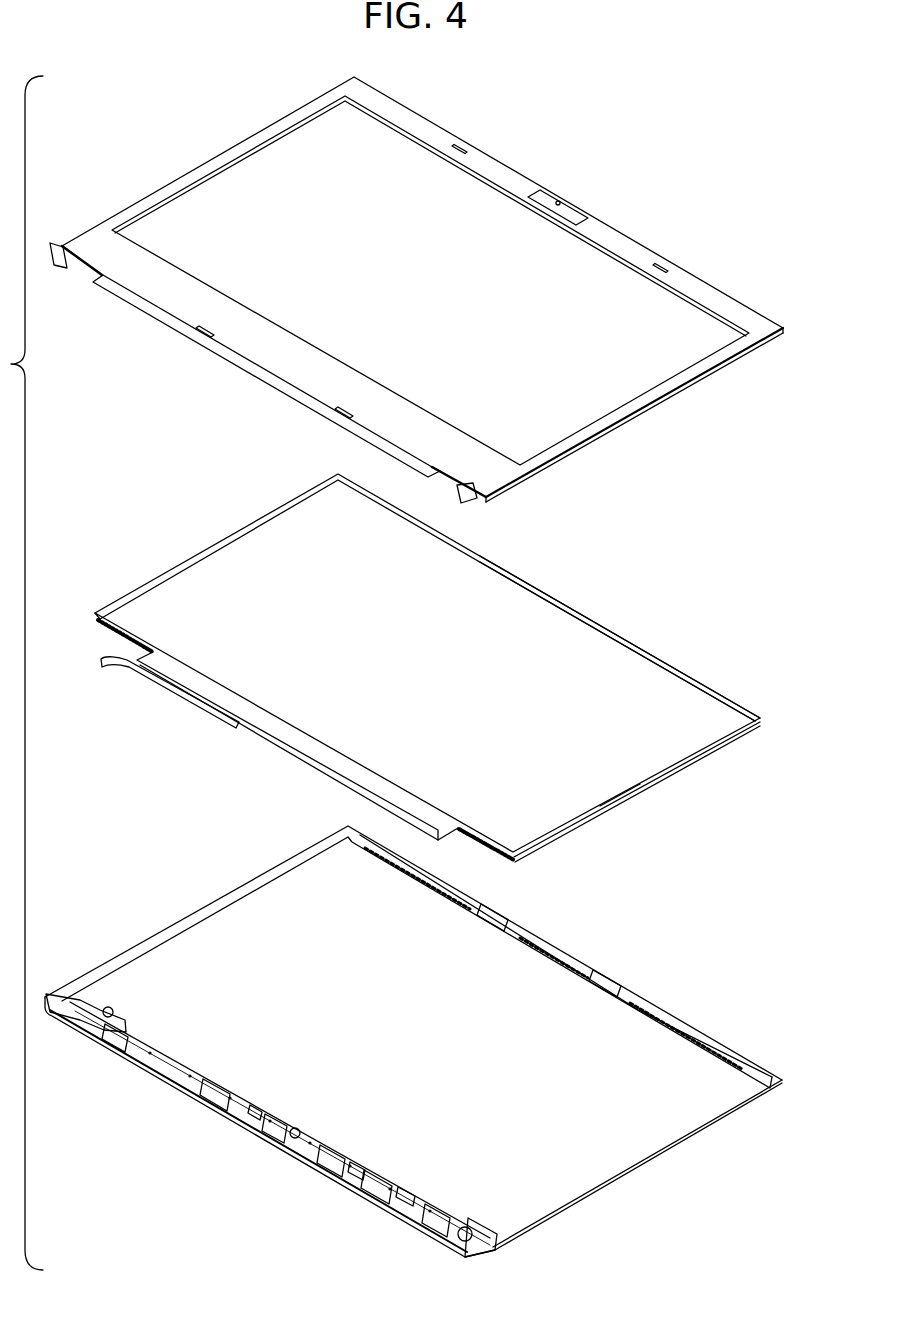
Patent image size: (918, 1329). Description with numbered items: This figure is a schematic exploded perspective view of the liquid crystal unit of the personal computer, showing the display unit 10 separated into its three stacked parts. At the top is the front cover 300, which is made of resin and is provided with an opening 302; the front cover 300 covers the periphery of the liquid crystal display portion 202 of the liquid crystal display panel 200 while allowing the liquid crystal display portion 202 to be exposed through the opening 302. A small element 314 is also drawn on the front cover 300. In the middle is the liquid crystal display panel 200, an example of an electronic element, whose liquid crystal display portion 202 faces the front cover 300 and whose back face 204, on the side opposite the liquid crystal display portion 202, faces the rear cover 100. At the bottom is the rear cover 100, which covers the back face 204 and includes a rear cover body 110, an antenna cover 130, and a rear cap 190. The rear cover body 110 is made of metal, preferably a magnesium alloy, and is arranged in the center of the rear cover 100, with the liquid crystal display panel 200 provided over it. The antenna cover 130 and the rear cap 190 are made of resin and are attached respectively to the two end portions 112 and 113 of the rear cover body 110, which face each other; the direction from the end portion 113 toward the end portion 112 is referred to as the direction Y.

The display unit 10 is at (510, 76).
The front cover 300 is at (736, 278).
The opening 302 is at (674, 365).
The camera module 314 is at (551, 193).
The liquid crystal display panel 200 is at (725, 683).
The liquid crystal display portion 202 is at (601, 642).
The back face 204 is at (620, 777).
The rear cover 100 is at (665, 983).
The rear cover body 110 is at (603, 1148).
The end portion 112 is at (658, 1033).
The antenna cover 130 is at (738, 1067).
The rear cap 190 is at (368, 1182).
The end portion 113 is at (400, 1193).